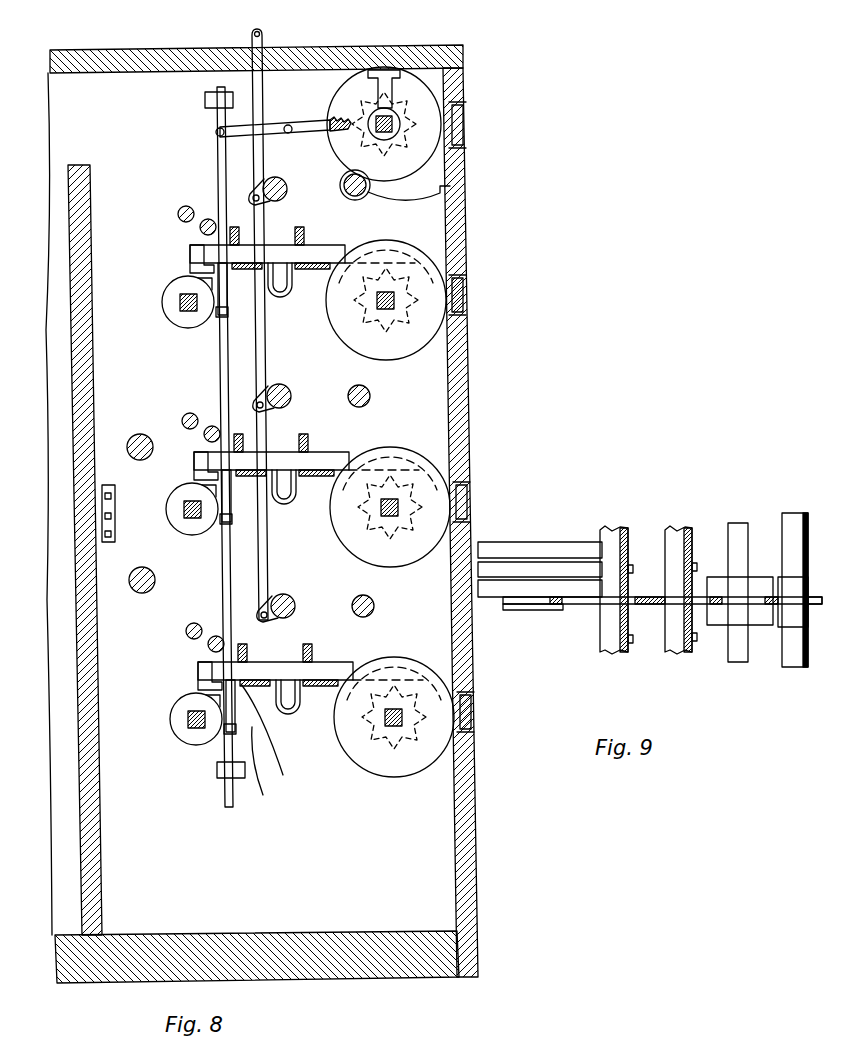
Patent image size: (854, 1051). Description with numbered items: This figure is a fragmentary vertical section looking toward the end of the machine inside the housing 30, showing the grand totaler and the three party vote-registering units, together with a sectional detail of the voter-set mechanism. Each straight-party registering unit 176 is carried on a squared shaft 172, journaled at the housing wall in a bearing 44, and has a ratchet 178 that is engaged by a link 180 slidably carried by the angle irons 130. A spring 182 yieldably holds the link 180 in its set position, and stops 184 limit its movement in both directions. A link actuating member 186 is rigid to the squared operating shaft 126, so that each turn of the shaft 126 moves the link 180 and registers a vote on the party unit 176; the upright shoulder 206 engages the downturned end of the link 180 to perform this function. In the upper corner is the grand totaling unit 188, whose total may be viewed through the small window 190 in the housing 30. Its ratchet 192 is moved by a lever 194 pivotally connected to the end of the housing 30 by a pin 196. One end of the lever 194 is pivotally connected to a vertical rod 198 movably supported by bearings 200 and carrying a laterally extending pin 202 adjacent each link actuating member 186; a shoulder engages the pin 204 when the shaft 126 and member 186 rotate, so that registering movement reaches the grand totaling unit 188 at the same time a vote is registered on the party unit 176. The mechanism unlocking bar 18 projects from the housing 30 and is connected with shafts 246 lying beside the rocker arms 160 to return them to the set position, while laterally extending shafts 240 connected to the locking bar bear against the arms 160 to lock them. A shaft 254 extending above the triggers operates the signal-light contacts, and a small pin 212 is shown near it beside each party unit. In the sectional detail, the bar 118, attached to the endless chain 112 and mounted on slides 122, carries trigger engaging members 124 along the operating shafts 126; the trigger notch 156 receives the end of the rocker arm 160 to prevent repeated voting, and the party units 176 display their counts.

In FIG. 8, the mechanism unlocking bar 18 is at (250, 38).
In FIG. 8, the housing 30 is at (474, 897).
In FIG. 8, the shaft bearing 44 is at (467, 303).
In FIG. 8, the endless chain 112 is at (106, 483).
In FIG. 9, the bar 118 is at (775, 597).
In FIG. 8, the slides 122 is at (144, 434).
In FIG. 9, the slides 122 is at (805, 513).
In FIG. 9, the trigger engaging member 124 is at (685, 528).
In FIG. 8, the operating shaft 126 is at (178, 302).
In FIG. 9, the operating shaft 126 is at (737, 630).
In FIG. 8, the angle iron 130 is at (299, 228).
In FIG. 9, the angle iron 130 is at (616, 528).
In FIG. 9, the notch 156 is at (552, 608).
In FIG. 9, the rocker arm 160 is at (562, 612).
In FIG. 8, the squared shaft 172 is at (398, 300).
In FIG. 8, the straight-party registering unit 176 is at (350, 335).
In FIG. 9, the straight-party registering unit 176 is at (530, 524).
In FIG. 8, the ratchet 178 is at (470, 252).
In FIG. 8, the link 180 is at (336, 247).
In FIG. 8, the spring 182 is at (294, 498).
In FIG. 8, the stops 184 is at (286, 529).
In FIG. 8, the link actuating member 186 is at (172, 294).
In FIG. 8, the grand totaling unit 188 is at (428, 142).
In FIG. 8, the window 190 is at (465, 132).
In FIG. 8, the ratchet 192 is at (425, 108).
In FIG. 8, the lever 194 is at (310, 123).
In FIG. 8, the pin 196 is at (288, 126).
In FIG. 8, the vertical rod 198 is at (218, 160).
In FIG. 8, the bearings 200 is at (205, 100).
In FIG. 8, the pin 202 is at (220, 318).
In FIG. 8, the pin 204 is at (215, 527).
In FIG. 8, the upright shoulder 206 is at (192, 258).
In FIG. 8, the stop pin 212 is at (184, 204).
In FIG. 8, the shaft 240 is at (370, 194).
In FIG. 8, the shaft 246 is at (282, 180).
In FIG. 8, the shaft 254 is at (201, 228).